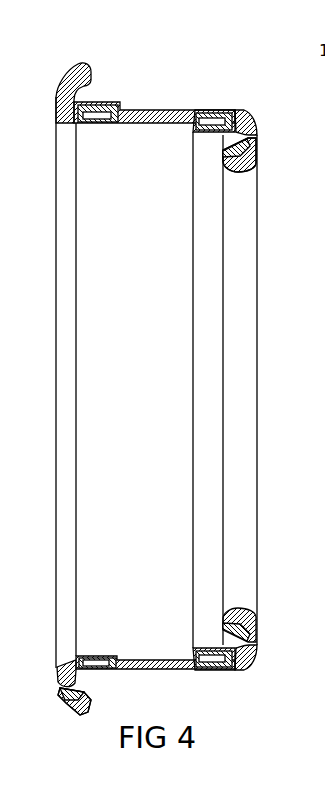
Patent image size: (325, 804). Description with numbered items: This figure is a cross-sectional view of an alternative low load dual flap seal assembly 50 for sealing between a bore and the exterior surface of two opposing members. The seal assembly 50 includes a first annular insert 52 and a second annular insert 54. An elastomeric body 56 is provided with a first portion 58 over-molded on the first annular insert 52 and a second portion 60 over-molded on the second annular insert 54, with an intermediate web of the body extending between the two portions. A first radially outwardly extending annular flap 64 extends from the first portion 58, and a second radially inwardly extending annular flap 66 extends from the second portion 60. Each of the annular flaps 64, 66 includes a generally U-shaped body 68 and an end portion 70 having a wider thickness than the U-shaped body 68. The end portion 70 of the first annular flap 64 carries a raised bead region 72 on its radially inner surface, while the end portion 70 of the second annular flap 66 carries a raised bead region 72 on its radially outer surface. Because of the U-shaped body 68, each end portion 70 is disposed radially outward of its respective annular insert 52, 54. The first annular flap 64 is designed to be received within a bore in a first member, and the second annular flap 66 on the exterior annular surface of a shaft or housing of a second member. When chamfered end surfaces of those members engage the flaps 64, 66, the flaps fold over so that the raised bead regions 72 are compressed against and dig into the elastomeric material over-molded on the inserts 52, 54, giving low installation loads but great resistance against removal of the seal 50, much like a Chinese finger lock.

The low load dual flap seal assembly 50 is at (206, 58).
The first annular insert 52 is at (93, 658).
The second annular insert 54 is at (208, 118).
The elastomeric body 56 is at (120, 128).
The first portion 58 is at (131, 670).
The second portion 60 is at (212, 132).
The first radially outwardly extending annular flap 64 is at (70, 722).
The second radially inwardly extending annular flap 66 is at (257, 165).
The U-shaped body 68 is at (258, 135).
The end portion 70 is at (233, 172).
The raised bead region 72 is at (223, 151).